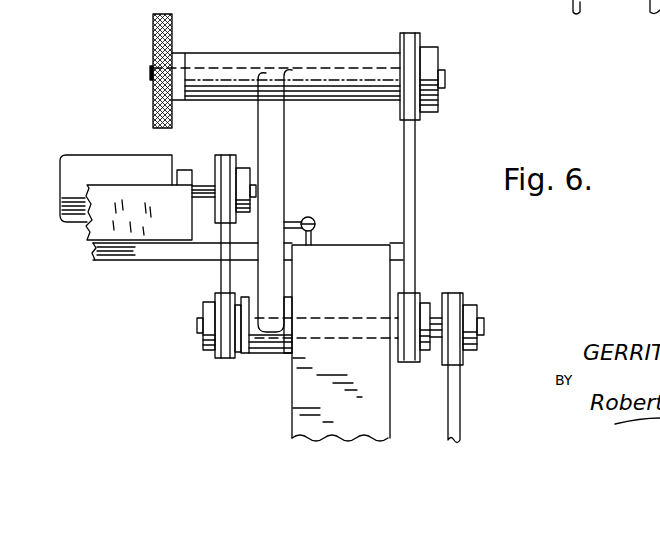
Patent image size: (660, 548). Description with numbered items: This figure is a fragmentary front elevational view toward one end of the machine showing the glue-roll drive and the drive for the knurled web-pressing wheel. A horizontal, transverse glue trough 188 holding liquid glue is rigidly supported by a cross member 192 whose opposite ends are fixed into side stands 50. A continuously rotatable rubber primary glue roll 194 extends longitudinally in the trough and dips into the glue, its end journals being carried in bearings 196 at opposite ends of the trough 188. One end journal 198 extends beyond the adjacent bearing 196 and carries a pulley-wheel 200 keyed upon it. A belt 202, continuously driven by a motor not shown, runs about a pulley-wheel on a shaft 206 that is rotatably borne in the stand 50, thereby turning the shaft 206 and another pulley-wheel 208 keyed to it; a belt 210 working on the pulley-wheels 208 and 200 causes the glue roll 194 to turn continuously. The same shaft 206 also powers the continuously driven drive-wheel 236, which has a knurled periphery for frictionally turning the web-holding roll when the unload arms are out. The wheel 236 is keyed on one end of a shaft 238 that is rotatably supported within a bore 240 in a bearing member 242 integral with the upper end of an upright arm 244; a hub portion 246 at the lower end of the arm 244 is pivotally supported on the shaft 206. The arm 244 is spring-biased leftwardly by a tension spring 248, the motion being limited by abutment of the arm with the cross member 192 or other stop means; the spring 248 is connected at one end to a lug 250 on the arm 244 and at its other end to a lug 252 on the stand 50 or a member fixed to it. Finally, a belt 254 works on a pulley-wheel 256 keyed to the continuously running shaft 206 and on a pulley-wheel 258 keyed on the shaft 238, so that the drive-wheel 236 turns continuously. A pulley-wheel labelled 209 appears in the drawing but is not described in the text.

The side stand 50 is at (310, 388).
The glue trough 188 is at (100, 228).
The cross member 192 is at (110, 250).
The primary glue roll 194 is at (113, 164).
The bearing 196 is at (188, 172).
The end journal 198 is at (254, 192).
The pulley-wheel 200 is at (237, 160).
The belt 202 is at (452, 373).
The shaft 206 is at (197, 328).
The pulley-wheel 208 is at (217, 293).
The pulley 209 is at (466, 298).
The belt 210 is at (222, 273).
The drive-wheel 236 is at (152, 47).
The shaft 238 is at (446, 77).
The bore 240 is at (342, 66).
The bearing member 242 is at (268, 53).
The upright arm 244 is at (270, 118).
The hub portion 246 is at (290, 305).
The tension spring 248 is at (316, 221).
The lug 250 is at (291, 218).
The lug 252 is at (313, 238).
The belt 254 is at (412, 196).
The pulley-wheel 256 is at (422, 295).
The pulley-wheel 258 is at (426, 113).